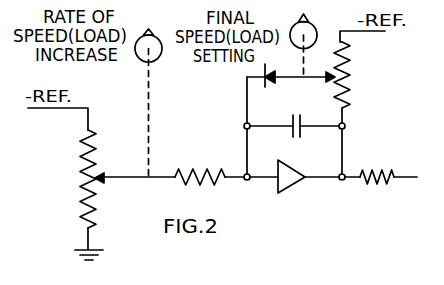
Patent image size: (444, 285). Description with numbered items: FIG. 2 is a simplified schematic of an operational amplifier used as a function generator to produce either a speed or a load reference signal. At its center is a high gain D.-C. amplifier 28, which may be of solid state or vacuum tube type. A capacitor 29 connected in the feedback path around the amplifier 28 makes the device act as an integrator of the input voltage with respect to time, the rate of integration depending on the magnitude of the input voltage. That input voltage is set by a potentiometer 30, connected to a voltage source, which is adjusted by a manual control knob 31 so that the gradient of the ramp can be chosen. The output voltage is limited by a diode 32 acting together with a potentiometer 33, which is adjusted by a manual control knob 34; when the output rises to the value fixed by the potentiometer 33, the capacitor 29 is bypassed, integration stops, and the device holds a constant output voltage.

The high gain D.-C. amplifier 28 is at (289, 191).
The capacitor 29 is at (298, 139).
The potentiometer 30 is at (83, 166).
The manual control knob 31 is at (145, 56).
The diode 32 is at (270, 86).
The potentiometer 33 is at (349, 99).
The manual control knob 34 is at (311, 29).